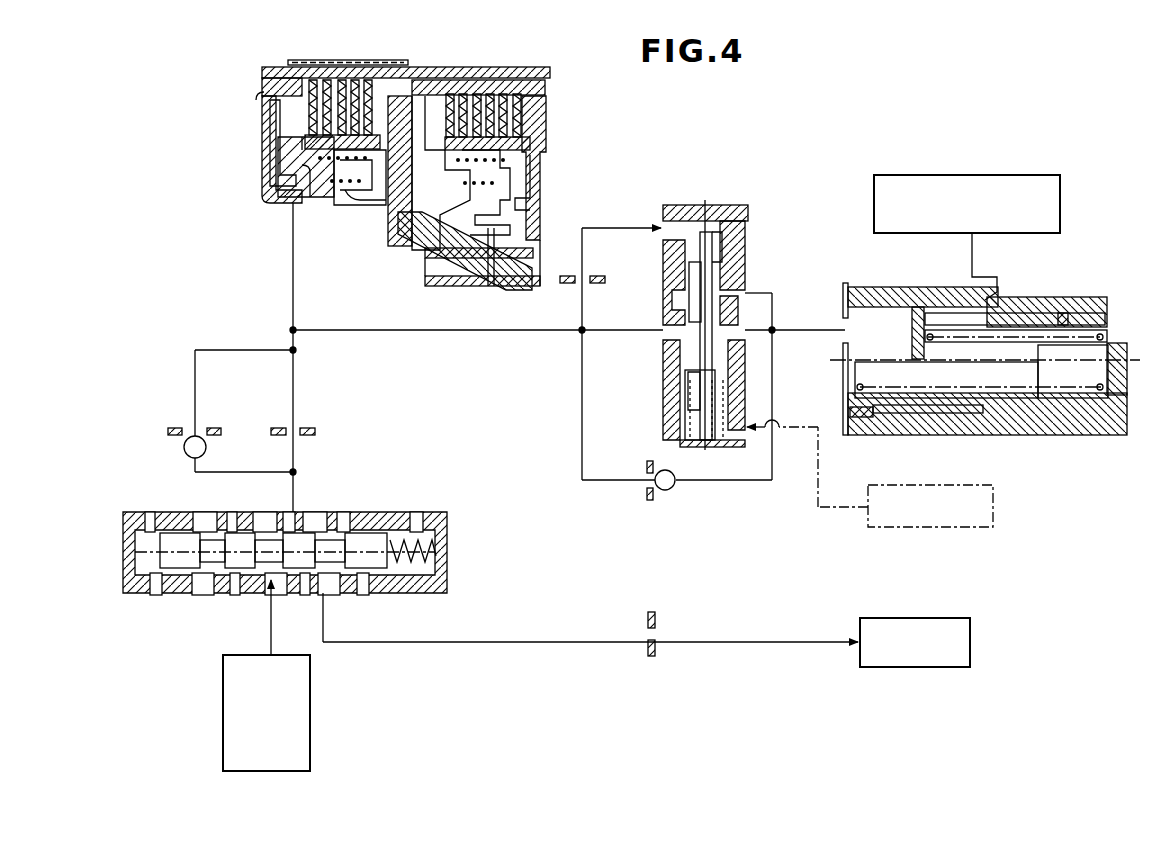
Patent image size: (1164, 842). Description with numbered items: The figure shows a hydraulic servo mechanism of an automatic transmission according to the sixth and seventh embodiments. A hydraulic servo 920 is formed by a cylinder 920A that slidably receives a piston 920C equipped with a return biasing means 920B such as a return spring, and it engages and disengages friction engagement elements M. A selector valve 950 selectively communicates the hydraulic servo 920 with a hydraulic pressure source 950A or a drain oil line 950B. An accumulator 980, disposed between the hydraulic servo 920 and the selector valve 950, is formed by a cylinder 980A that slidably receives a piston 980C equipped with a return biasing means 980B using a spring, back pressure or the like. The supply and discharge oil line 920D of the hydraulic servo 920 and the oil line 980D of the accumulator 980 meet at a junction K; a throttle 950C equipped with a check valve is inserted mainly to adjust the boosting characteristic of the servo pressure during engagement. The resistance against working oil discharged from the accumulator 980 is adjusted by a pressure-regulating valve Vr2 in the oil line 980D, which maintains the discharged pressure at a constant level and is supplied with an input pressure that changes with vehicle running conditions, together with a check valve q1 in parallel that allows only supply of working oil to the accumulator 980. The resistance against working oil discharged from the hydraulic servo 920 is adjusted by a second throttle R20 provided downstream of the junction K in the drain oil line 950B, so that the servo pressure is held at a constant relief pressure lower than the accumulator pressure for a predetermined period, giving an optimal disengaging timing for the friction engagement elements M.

The friction engagement elements M is at (340, 76).
The hydraulic servo 920 is at (361, 163).
The cylinder 920A is at (258, 143).
The return biasing means 920B is at (347, 185).
The piston 920C is at (262, 178).
The supply and discharge oil line 920D is at (292, 268).
The junction K is at (291, 330).
The oil line 980D is at (420, 332).
The throttle 950C is at (306, 424).
The selector valve 950 is at (402, 511).
The hydraulic pressure source 950A is at (312, 708).
The drain oil line 950B is at (797, 640).
The second throttle R20 is at (660, 626).
The pressure-regulating valve Vr2 is at (742, 204).
The check valve q1 is at (652, 483).
The accumulator 980 is at (985, 339).
The cylinder 980A is at (1082, 408).
The return biasing means 980B is at (1075, 330).
The piston 980C is at (943, 402).